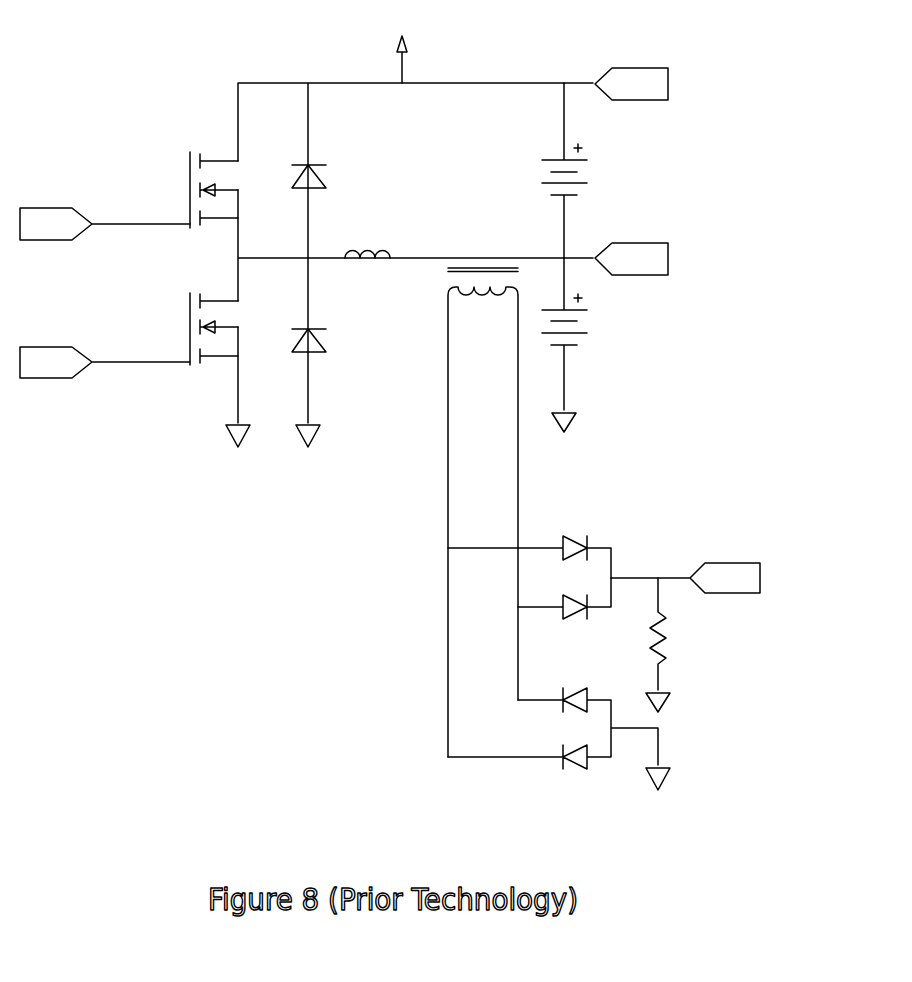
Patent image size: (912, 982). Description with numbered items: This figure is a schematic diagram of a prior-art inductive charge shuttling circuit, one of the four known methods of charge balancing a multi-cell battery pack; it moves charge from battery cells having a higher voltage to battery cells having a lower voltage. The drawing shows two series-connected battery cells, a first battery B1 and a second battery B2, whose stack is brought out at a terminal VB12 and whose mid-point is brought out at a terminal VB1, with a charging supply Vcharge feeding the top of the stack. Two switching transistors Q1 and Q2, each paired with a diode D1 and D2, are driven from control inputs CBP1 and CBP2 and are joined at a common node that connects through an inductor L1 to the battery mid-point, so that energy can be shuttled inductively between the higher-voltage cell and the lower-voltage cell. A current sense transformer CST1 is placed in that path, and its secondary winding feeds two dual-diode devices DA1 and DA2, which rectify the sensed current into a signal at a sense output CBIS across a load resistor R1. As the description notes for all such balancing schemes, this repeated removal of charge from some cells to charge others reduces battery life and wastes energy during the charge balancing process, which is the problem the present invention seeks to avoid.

The first MOSFET switch Q1 is at (191, 190).
The second MOSFET switch Q2 is at (191, 329).
The first diode D1 is at (303, 167).
The second diode D2 is at (300, 330).
The inductor L1 is at (367, 240).
The current sense transformer CST1 is at (483, 492).
The first battery B1 is at (566, 170).
The second battery B2 is at (566, 345).
The dual diode BAT54C DA1 is at (530, 567).
The dual diode BAT54A DA2 is at (559, 744).
The resistor R1 is at (668, 645).
The charge/balance pulse input 1 CBP1 is at (105, 224).
The charge/balance pulse input 2 CBP2 is at (105, 362).
The battery stack voltage terminal VB12 is at (631, 84).
The battery 1 voltage terminal VB1 is at (631, 259).
The current sense output CBIS is at (685, 578).
The charge voltage supply Vcharge is at (408, 49).